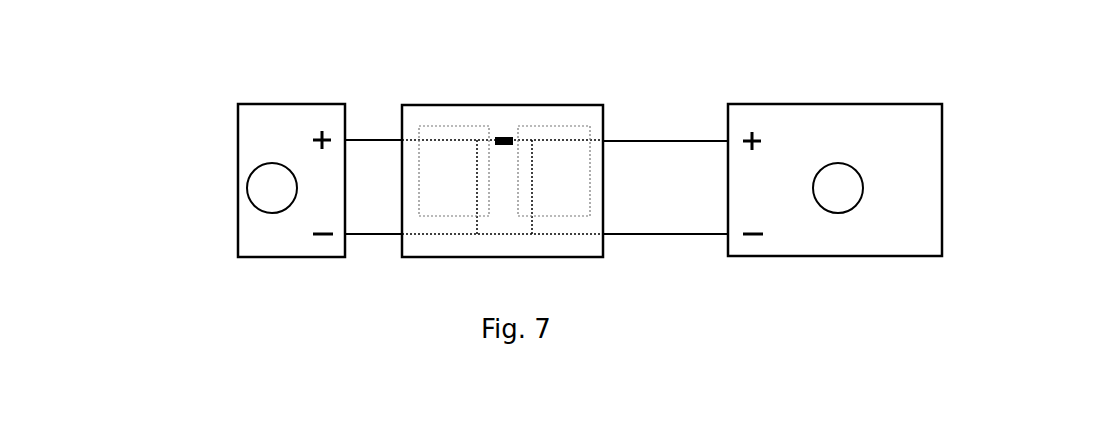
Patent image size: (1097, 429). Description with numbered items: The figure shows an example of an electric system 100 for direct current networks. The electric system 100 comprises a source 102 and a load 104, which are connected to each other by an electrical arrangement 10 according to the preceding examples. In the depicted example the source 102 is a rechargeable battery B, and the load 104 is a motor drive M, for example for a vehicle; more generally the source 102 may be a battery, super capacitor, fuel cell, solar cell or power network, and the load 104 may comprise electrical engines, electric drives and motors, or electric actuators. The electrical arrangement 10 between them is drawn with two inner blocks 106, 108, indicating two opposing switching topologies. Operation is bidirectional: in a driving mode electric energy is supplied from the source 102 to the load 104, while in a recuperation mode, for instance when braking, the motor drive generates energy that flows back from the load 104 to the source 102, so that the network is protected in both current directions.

The electric system 100 is at (166, 146).
The source 102 is at (328, 103).
The electrical arrangement 10 is at (515, 140).
The first switching module 106 is at (433, 125).
The second switching module 108 is at (533, 125).
The load 104 is at (915, 103).